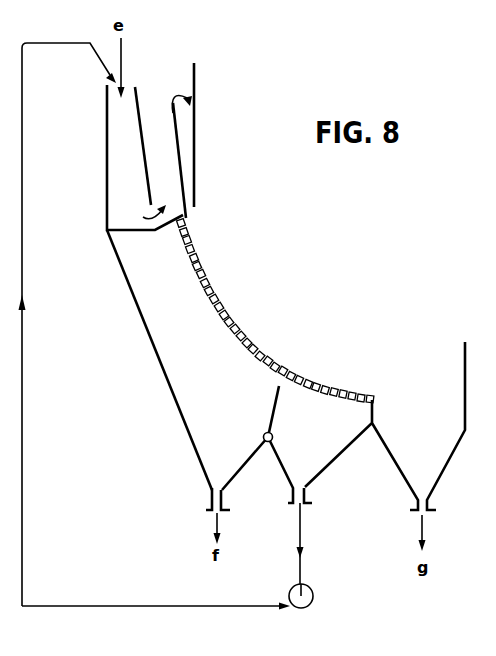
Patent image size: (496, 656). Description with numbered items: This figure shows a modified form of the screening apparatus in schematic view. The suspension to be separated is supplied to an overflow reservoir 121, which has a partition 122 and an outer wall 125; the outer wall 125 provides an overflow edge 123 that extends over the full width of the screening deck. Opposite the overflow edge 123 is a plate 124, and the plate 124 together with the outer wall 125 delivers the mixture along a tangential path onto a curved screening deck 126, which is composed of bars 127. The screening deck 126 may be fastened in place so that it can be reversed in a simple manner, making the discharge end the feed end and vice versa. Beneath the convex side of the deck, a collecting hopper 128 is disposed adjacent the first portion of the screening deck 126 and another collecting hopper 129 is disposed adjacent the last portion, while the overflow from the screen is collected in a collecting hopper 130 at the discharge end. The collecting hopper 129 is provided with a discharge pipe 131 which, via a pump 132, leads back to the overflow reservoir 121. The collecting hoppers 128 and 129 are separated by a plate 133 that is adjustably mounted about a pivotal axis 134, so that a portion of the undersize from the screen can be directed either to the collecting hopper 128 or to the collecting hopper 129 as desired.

The overflow reservoir 121 is at (145, 157).
The partition 122 is at (148, 98).
The overflow edge 123 is at (177, 108).
The plate 124 is at (197, 81).
The outer wall 125 is at (185, 183).
The curved screening deck 126 is at (259, 355).
The bars 127 is at (211, 295).
The collecting hopper 128 is at (175, 393).
The collecting hopper 129 is at (272, 461).
The collecting hopper 130 is at (385, 426).
The discharge pipe 131 is at (127, 604).
The pump 132 is at (310, 605).
The plate 133 is at (275, 405).
The pivotal axis 134 is at (251, 431).